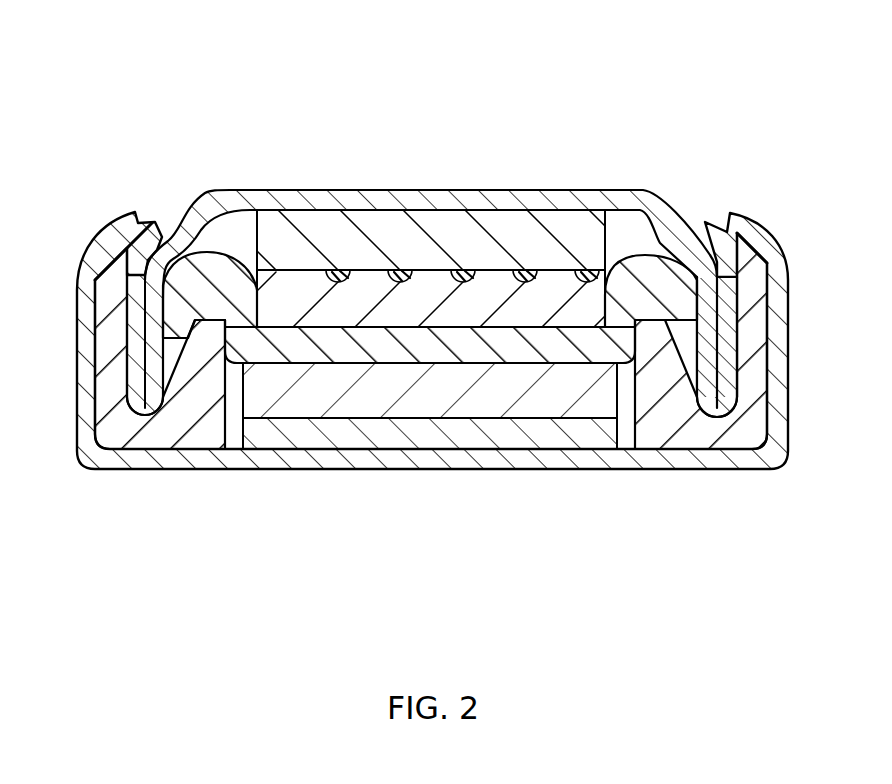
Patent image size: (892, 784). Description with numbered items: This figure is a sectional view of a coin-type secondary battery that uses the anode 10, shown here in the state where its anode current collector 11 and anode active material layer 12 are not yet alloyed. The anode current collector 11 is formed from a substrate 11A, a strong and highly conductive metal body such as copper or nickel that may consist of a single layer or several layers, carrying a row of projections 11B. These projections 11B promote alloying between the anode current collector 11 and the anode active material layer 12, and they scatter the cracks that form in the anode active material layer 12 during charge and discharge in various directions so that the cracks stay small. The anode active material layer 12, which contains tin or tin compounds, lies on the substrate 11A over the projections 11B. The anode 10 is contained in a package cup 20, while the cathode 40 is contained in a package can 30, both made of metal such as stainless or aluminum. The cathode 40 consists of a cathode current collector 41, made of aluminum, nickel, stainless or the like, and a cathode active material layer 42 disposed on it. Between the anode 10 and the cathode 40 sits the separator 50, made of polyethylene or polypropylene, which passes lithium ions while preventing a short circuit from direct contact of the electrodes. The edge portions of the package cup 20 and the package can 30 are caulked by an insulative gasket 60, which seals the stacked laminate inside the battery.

The anode 10 is at (432, 173).
The anode current collector 11 is at (432, 181).
The substrate 11A is at (387, 227).
The projection 11B is at (353, 132).
The anode active material layer 12 is at (370, 73).
The package cup 20 is at (286, 200).
The package can 30 is at (302, 471).
The cathode 40 is at (430, 479).
The cathode current collector 41 is at (562, 540).
The cathode active material layer 42 is at (540, 400).
The separator 50 is at (655, 275).
The insulative gasket 60 is at (188, 447).